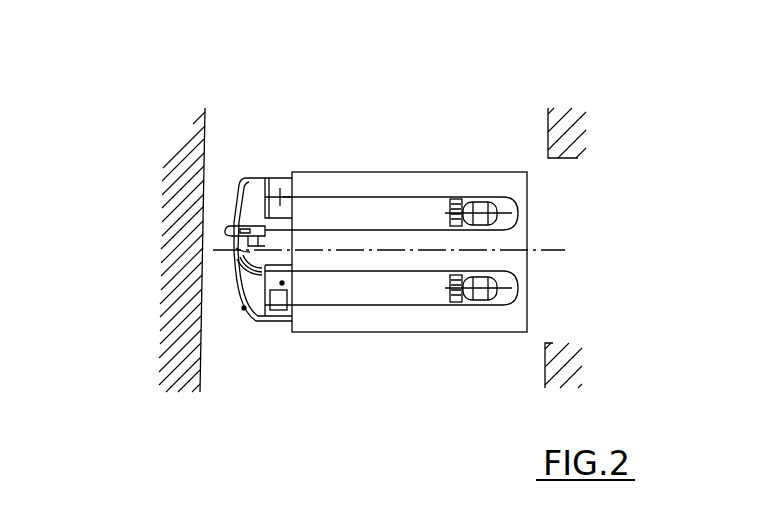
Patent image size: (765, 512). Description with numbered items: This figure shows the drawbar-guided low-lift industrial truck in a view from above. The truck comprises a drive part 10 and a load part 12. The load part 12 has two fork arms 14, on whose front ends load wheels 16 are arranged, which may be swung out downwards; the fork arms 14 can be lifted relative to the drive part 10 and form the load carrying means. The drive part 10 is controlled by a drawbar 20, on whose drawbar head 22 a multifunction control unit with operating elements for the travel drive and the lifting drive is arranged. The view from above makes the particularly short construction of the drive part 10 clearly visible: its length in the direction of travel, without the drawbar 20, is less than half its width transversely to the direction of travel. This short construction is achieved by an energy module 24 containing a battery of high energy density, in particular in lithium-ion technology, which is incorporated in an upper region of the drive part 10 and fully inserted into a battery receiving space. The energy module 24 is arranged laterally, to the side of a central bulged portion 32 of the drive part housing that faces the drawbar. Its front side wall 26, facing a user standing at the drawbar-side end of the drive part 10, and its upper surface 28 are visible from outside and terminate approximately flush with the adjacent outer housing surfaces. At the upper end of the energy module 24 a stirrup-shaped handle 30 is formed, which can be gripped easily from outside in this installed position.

The drive part 10 is at (228, 150).
The load part 12 is at (374, 148).
The fork arms 14 is at (405, 212).
The load wheels 16 is at (505, 210).
The drawbar 20 is at (230, 264).
The drawbar head 22 is at (230, 229).
The energy module 24 is at (267, 178).
The front side wall 26 is at (252, 177).
The upper surface 28 is at (285, 177).
The stirrup-shaped handle 30 is at (283, 197).
The central bulged portion 32 is at (244, 306).